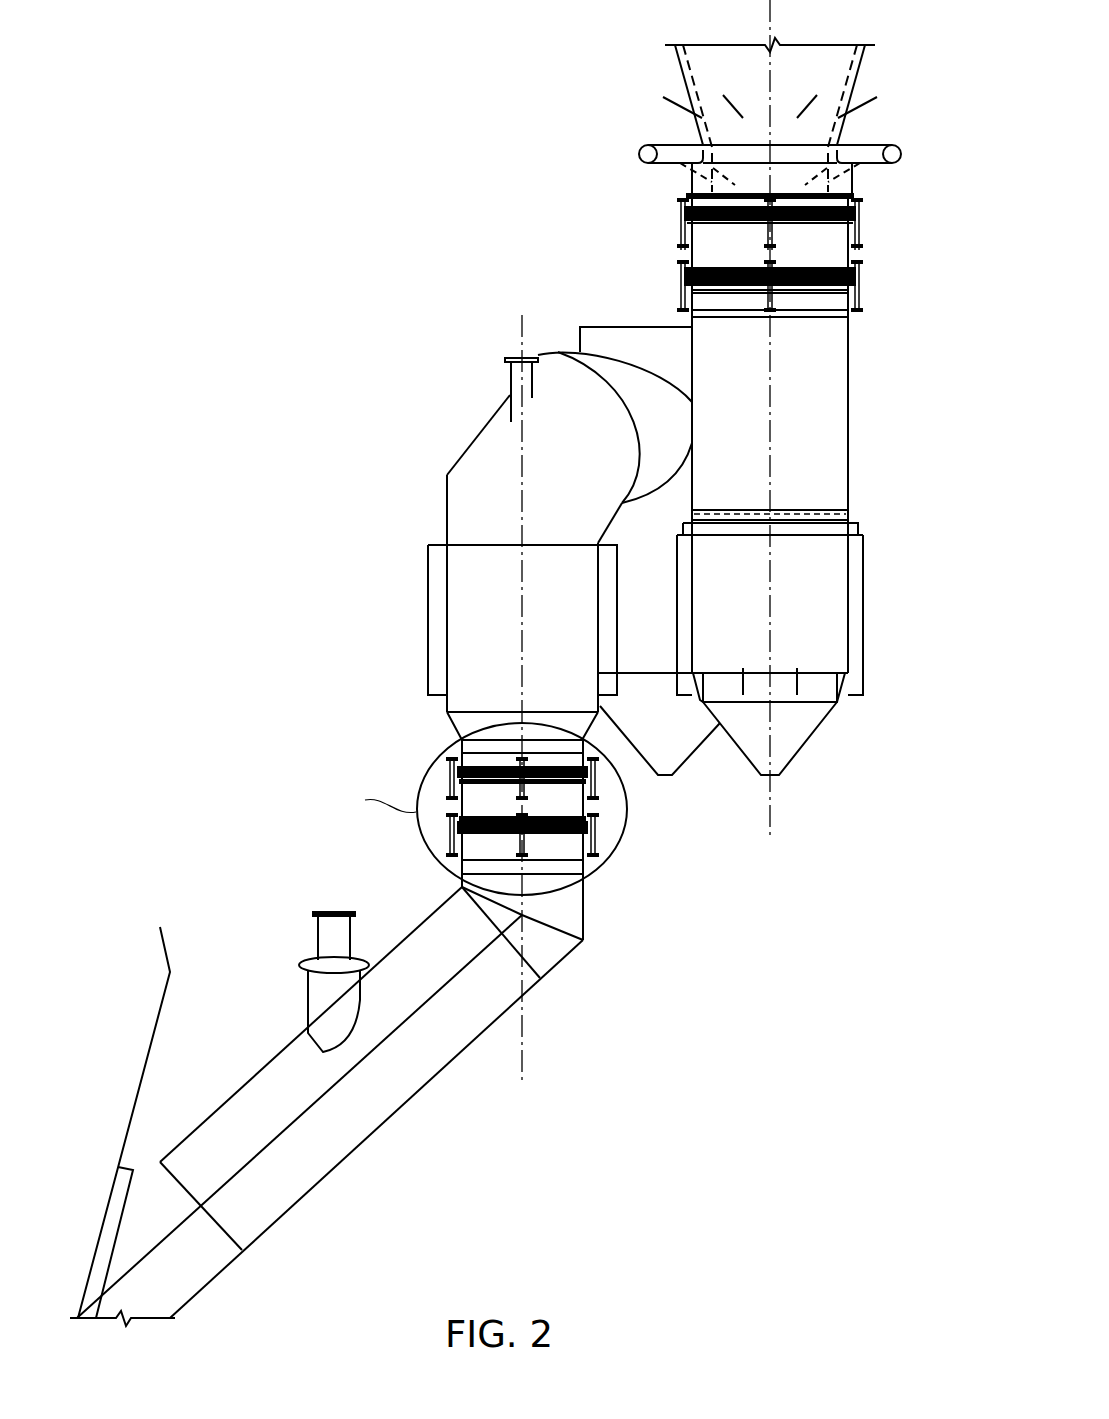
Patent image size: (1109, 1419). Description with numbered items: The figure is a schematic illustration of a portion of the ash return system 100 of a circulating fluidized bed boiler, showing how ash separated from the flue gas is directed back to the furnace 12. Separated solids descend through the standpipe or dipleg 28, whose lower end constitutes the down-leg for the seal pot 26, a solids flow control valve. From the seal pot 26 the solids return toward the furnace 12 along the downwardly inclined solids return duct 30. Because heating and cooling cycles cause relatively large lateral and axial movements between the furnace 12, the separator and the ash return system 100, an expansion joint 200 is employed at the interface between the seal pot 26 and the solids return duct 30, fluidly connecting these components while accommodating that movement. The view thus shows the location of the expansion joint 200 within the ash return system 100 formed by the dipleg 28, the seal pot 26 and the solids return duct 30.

The ash return system 100 is at (296, 392).
The dipleg 28 is at (835, 66).
The seal pot 26 is at (876, 518).
The expansion joint 200 is at (599, 830).
The solids return duct 30 is at (348, 1123).
The furnace 12 is at (153, 1038).